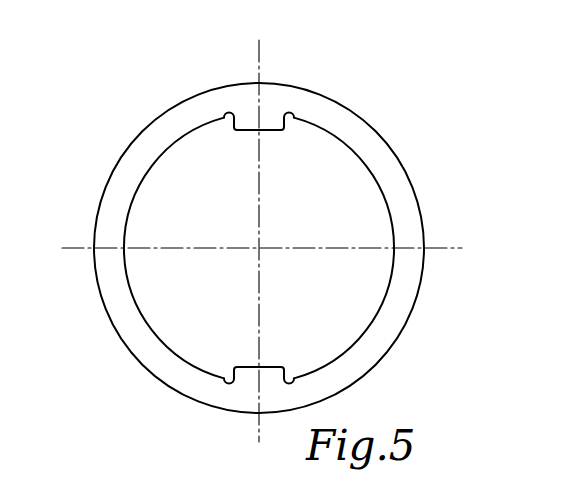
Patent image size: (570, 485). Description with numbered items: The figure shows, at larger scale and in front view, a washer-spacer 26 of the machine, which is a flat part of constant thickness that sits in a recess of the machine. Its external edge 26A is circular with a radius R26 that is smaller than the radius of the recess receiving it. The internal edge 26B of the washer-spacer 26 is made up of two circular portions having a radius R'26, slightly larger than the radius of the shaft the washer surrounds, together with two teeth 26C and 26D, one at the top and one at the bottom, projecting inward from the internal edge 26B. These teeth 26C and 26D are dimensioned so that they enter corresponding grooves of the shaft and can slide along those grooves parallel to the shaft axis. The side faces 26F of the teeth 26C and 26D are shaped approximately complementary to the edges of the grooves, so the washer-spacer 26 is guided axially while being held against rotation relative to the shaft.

The washer-spacer 26 is at (311, 219).
The external edge 26A is at (406, 143).
The internal edge 26B is at (366, 325).
The tooth 26C is at (270, 132).
The tooth 26D is at (250, 376).
The side faces 26F is at (295, 115).
The radius of the external edge R26 is at (383, 142).
The radius of the internal edge circular portions R'26 is at (196, 226).